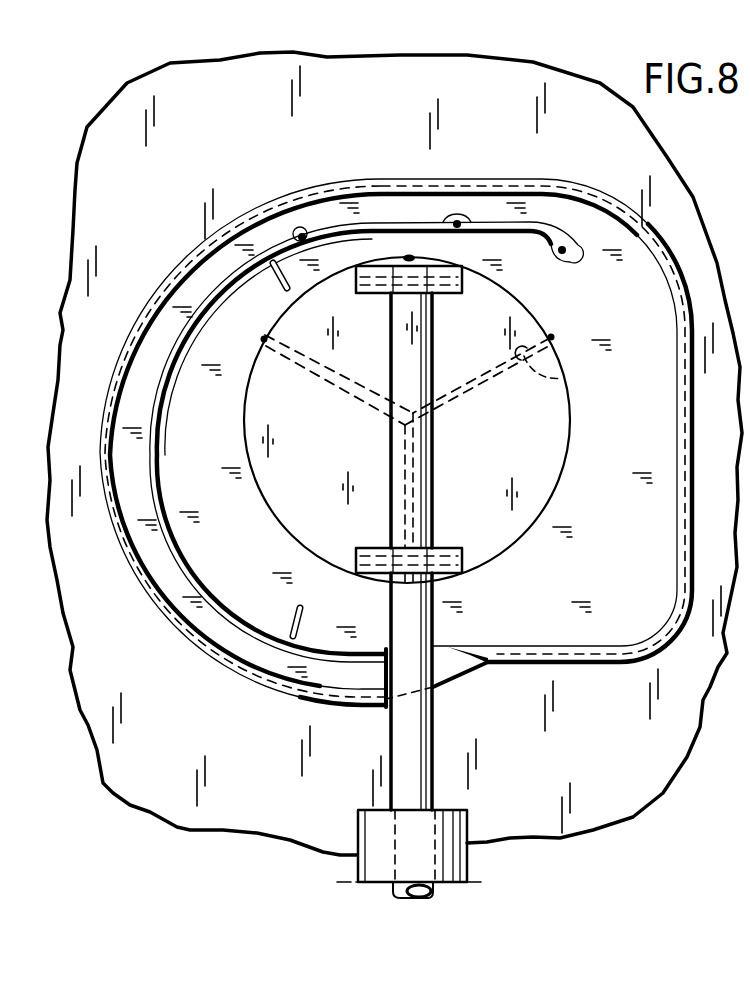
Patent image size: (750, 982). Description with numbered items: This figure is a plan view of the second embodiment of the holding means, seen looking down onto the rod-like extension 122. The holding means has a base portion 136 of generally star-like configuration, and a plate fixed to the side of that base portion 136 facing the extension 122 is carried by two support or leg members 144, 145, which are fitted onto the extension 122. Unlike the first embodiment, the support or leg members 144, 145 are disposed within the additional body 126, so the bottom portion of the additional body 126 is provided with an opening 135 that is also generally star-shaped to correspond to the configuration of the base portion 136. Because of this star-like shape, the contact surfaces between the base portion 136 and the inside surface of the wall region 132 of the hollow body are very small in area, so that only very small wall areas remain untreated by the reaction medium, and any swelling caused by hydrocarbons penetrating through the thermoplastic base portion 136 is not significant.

The rod-like extension 122 is at (433, 497).
The additional body 126 is at (586, 207).
The wall region 132 is at (375, 138).
The opening 135 is at (562, 378).
The base portion 136 is at (474, 380).
The support or leg member 144 is at (462, 570).
The support or leg member 145 is at (467, 270).